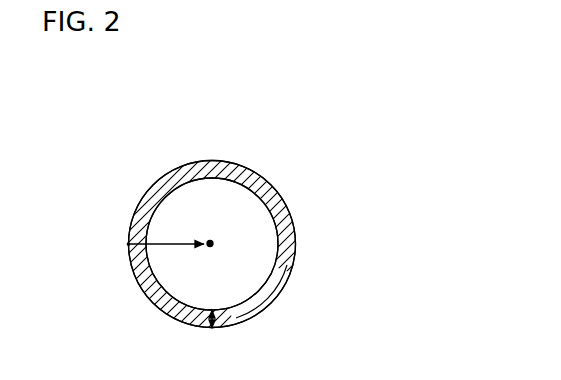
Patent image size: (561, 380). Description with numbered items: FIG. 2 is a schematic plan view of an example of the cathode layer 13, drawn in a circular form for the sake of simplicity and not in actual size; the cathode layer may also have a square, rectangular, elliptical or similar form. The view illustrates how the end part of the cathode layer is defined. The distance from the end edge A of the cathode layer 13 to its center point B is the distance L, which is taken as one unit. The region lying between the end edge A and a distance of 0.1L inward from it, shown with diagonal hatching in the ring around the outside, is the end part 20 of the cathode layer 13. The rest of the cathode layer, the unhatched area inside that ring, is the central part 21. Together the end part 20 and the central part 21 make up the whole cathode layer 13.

The cathode layer 13 is at (134, 120).
The end part 20 is at (240, 170).
The central part 21 is at (253, 224).
The end edge A is at (128, 244).
The center point B is at (212, 244).
The distance L is at (177, 247).
The distance 0.1L is at (222, 318).